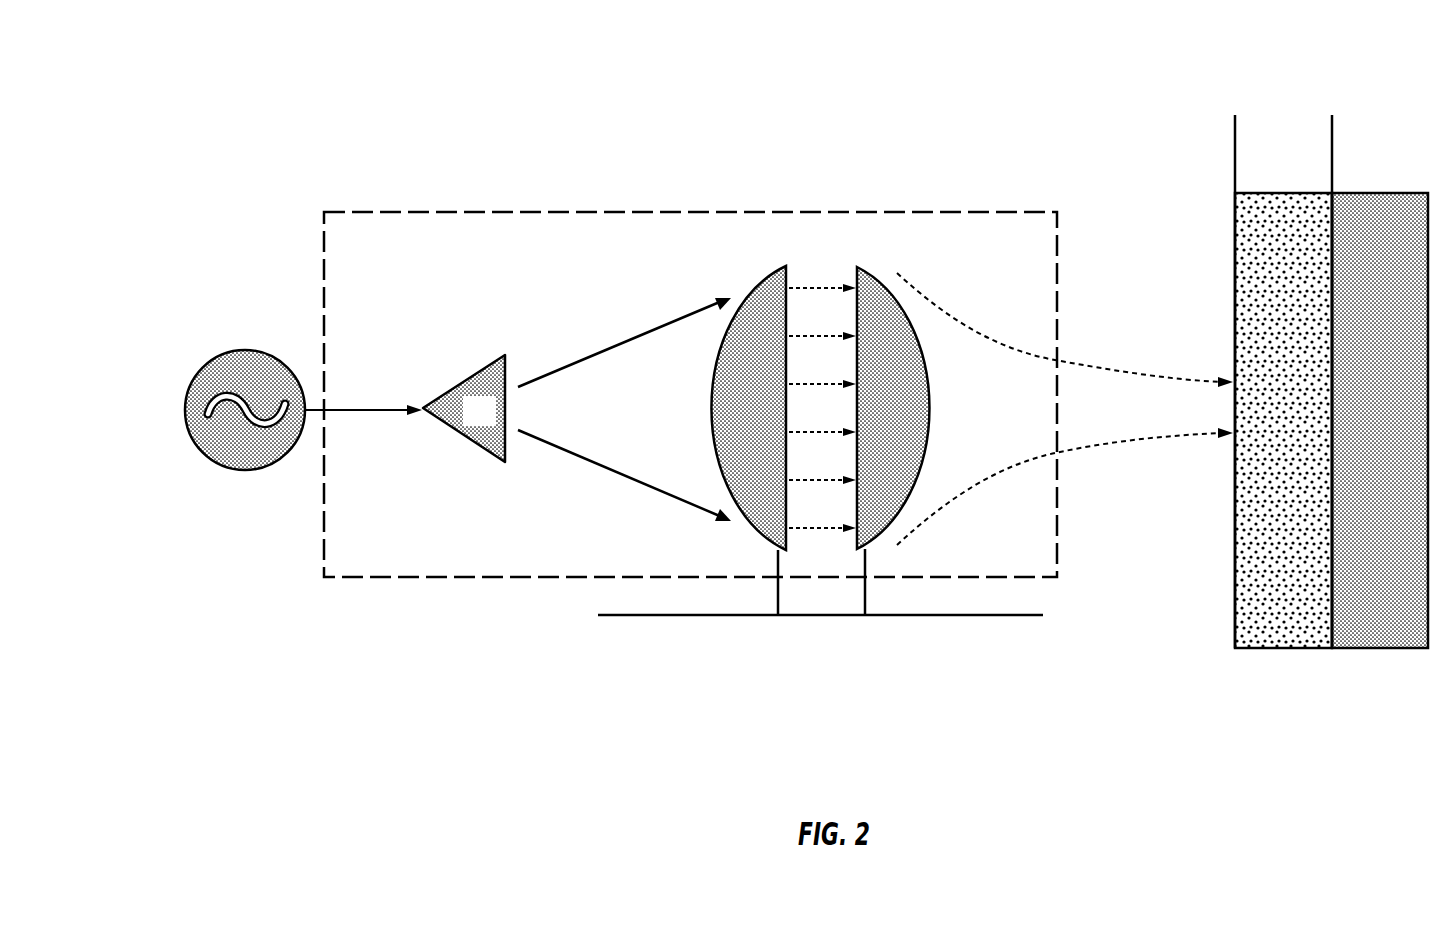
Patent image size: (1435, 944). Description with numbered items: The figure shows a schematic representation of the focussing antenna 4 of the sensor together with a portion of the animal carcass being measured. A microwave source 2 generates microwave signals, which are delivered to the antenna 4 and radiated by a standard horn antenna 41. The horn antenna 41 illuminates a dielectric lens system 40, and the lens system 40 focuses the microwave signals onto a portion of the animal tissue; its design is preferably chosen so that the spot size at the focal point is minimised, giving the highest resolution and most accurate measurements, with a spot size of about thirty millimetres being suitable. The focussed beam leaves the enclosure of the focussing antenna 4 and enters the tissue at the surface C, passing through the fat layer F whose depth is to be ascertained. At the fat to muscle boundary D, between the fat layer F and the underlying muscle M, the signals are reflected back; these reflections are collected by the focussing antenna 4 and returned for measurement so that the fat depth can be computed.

The microwave source 2 is at (243, 350).
The horn antenna 41 is at (444, 361).
The dielectric lens system 40 is at (864, 264).
The focussing antenna 4 is at (1003, 565).
The lens side of the film boundary C is at (1235, 364).
The fat to muscle boundary D is at (1332, 364).
The fat layer F is at (1283, 401).
The media M is at (1380, 401).